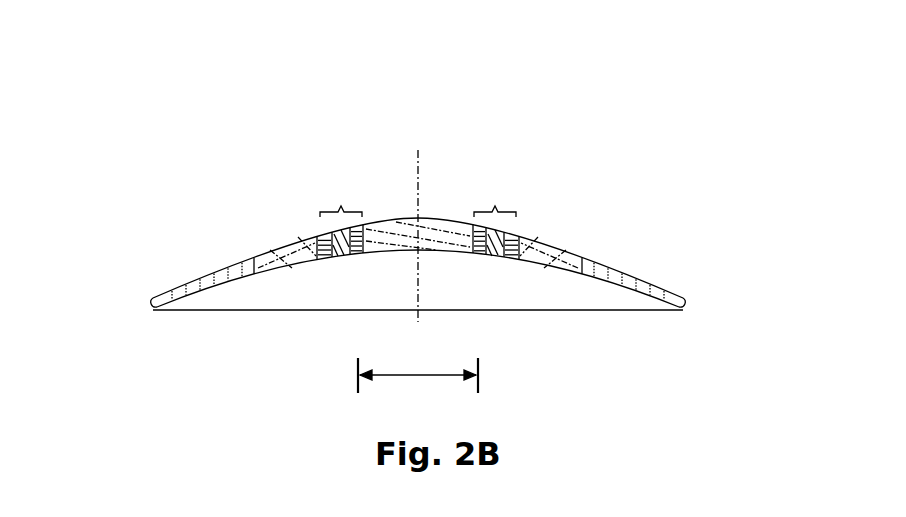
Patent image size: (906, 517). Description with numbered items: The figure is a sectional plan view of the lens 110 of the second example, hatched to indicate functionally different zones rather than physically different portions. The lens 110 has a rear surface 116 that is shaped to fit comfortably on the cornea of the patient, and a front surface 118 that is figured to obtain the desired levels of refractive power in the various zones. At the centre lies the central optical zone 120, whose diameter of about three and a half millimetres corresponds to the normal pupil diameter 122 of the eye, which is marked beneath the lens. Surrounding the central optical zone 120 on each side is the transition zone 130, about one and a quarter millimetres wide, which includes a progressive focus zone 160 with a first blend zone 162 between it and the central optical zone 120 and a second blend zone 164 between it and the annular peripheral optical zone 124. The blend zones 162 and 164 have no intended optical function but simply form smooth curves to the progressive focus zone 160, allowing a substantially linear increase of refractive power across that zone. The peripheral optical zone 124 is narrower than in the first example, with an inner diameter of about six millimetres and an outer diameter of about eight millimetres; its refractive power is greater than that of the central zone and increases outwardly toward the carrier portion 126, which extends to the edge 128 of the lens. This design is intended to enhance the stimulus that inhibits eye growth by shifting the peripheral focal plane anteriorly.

The lens 110 is at (490, 73).
The rear surface 116 is at (533, 293).
The front surface 118 is at (533, 231).
The central optical zone 120 is at (390, 228).
The pupil diameter 122 is at (393, 377).
The peripheral optical zone 124 is at (262, 251).
The carrier portion 126 is at (175, 292).
The lens edge 128 is at (152, 308).
The transition zone 130 is at (339, 206).
The progressive focus zone 160 is at (339, 247).
The first blend zone 162 is at (327, 246).
The second blend zone 164 is at (360, 248).